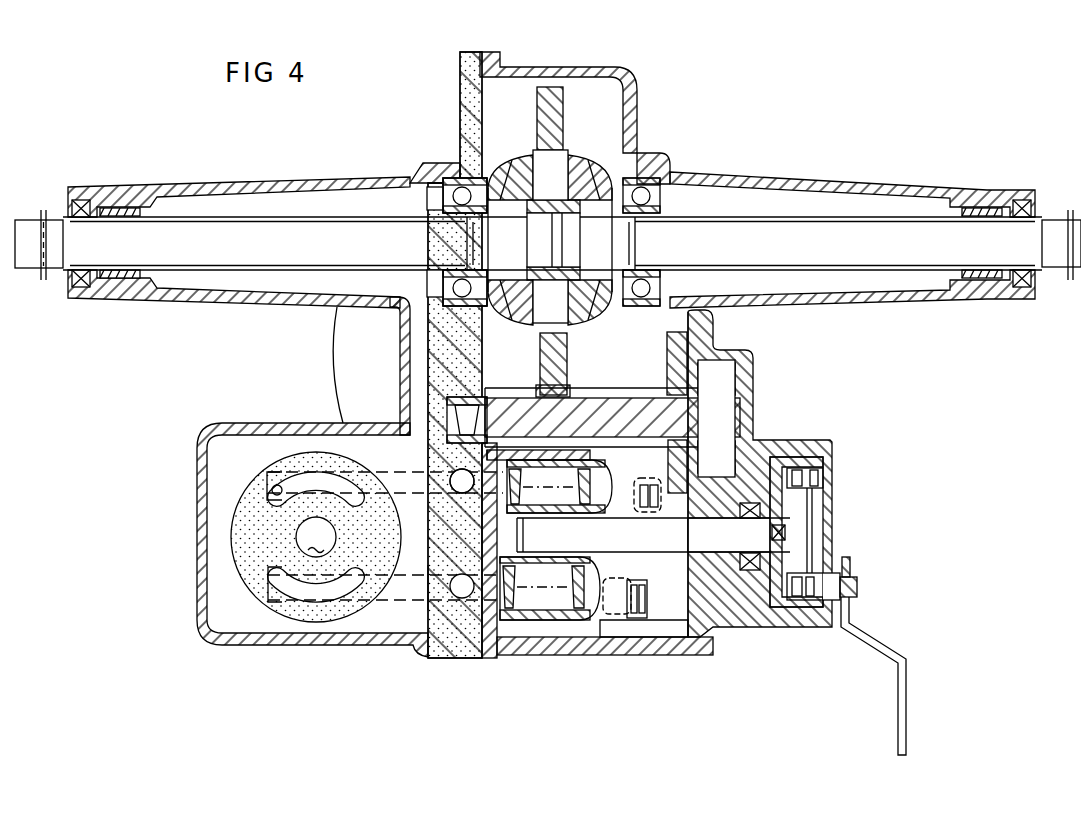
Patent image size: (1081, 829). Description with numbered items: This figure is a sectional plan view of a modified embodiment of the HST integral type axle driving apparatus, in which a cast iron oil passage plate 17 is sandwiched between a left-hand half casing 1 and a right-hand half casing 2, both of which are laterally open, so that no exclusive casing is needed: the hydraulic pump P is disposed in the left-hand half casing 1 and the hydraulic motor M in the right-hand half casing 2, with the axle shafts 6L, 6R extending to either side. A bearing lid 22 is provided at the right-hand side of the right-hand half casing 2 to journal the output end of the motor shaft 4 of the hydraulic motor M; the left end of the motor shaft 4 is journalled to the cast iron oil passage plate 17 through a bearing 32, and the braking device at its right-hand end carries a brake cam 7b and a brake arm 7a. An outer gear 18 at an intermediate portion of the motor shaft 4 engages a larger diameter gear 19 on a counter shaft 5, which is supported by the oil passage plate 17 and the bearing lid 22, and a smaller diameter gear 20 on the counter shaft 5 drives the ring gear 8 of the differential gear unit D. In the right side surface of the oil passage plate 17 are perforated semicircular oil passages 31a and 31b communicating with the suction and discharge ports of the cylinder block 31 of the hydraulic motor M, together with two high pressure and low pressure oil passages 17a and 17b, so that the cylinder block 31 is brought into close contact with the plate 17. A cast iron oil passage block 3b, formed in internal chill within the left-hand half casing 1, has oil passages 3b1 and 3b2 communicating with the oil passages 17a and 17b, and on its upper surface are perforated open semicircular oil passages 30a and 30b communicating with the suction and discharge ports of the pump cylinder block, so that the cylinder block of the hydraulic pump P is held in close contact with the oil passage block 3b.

The left-hand half casing 1 is at (258, 428).
The right-hand half casing 2 is at (845, 306).
The cast iron oil passage block 3b is at (308, 612).
The oil passage 3b1 is at (398, 592).
The oil passage 3b2 is at (397, 480).
The motor shaft 4 is at (657, 551).
The counter shaft 5 is at (652, 434).
The left axle shaft 6L is at (324, 261).
The right axle shaft 6R is at (802, 261).
The brake arm 7a is at (898, 700).
The brake cam 7b is at (858, 588).
The ring gear 8 is at (566, 124).
The cast iron oil passage plate 17 is at (470, 658).
The high pressure oil passage 17a is at (460, 597).
The low pressure oil passage 17b is at (451, 473).
The outer gear 18 is at (680, 575).
The larger diameter gear 19 is at (667, 362).
The smaller diameter gear 20 is at (528, 390).
The bearing lid 22 is at (758, 630).
The semicircular oil passage 30a is at (290, 586).
The semicircular oil passage 30b is at (272, 492).
The cylinder block 31 is at (558, 615).
The semicircular oil passage 31a is at (482, 595).
The semicircular oil passage 31b is at (458, 469).
The bearing 32 is at (430, 585).
The differential gear unit D is at (500, 121).
The hydraulic motor M is at (539, 659).
The hydraulic pump P is at (359, 627).